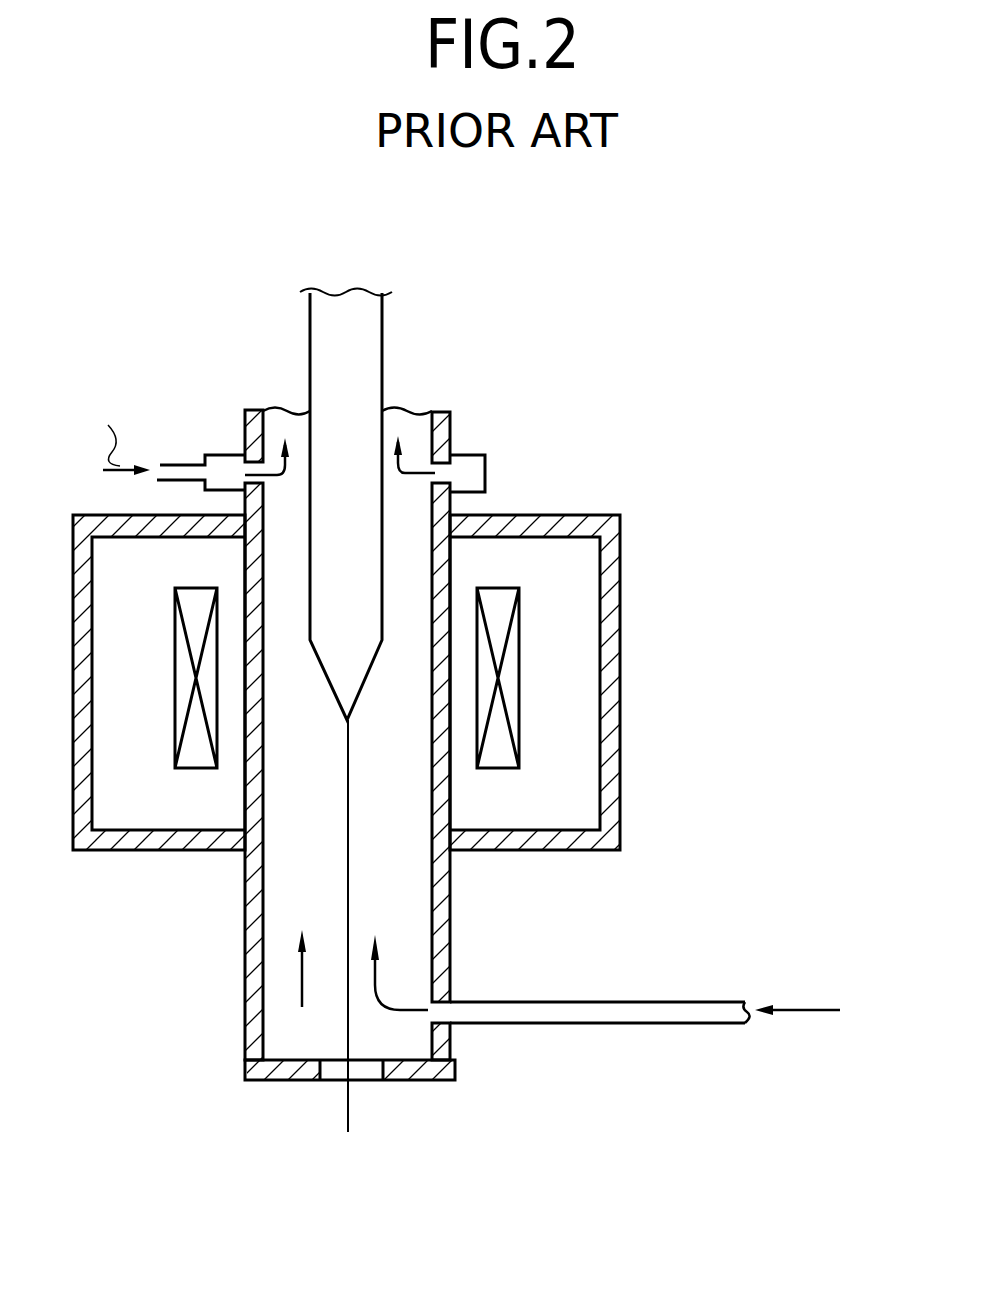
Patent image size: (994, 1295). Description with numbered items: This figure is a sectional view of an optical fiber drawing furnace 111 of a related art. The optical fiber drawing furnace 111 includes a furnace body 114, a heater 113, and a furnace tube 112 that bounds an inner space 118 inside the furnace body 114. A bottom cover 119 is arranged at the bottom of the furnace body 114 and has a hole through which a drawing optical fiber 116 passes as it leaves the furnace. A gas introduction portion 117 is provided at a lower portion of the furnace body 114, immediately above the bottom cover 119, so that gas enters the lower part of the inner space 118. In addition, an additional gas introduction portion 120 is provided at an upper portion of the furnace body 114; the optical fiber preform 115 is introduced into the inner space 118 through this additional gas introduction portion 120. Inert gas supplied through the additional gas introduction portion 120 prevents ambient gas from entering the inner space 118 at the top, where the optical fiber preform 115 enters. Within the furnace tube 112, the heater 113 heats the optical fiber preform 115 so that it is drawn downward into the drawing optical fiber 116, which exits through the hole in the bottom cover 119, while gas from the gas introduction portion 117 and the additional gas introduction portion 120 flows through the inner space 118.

The optical fiber drawing furnace 111 is at (816, 281).
The furnace tube 112 is at (447, 565).
The heater 113 is at (520, 668).
The furnace body 114 is at (620, 787).
The optical fiber preform 115 is at (360, 345).
The drawing optical fiber 116 is at (350, 1122).
The gas introduction portion 117 is at (555, 1005).
The inner space 118 is at (405, 882).
The bottom cover 119 is at (430, 1070).
The additional gas introduction portion 120 is at (486, 468).